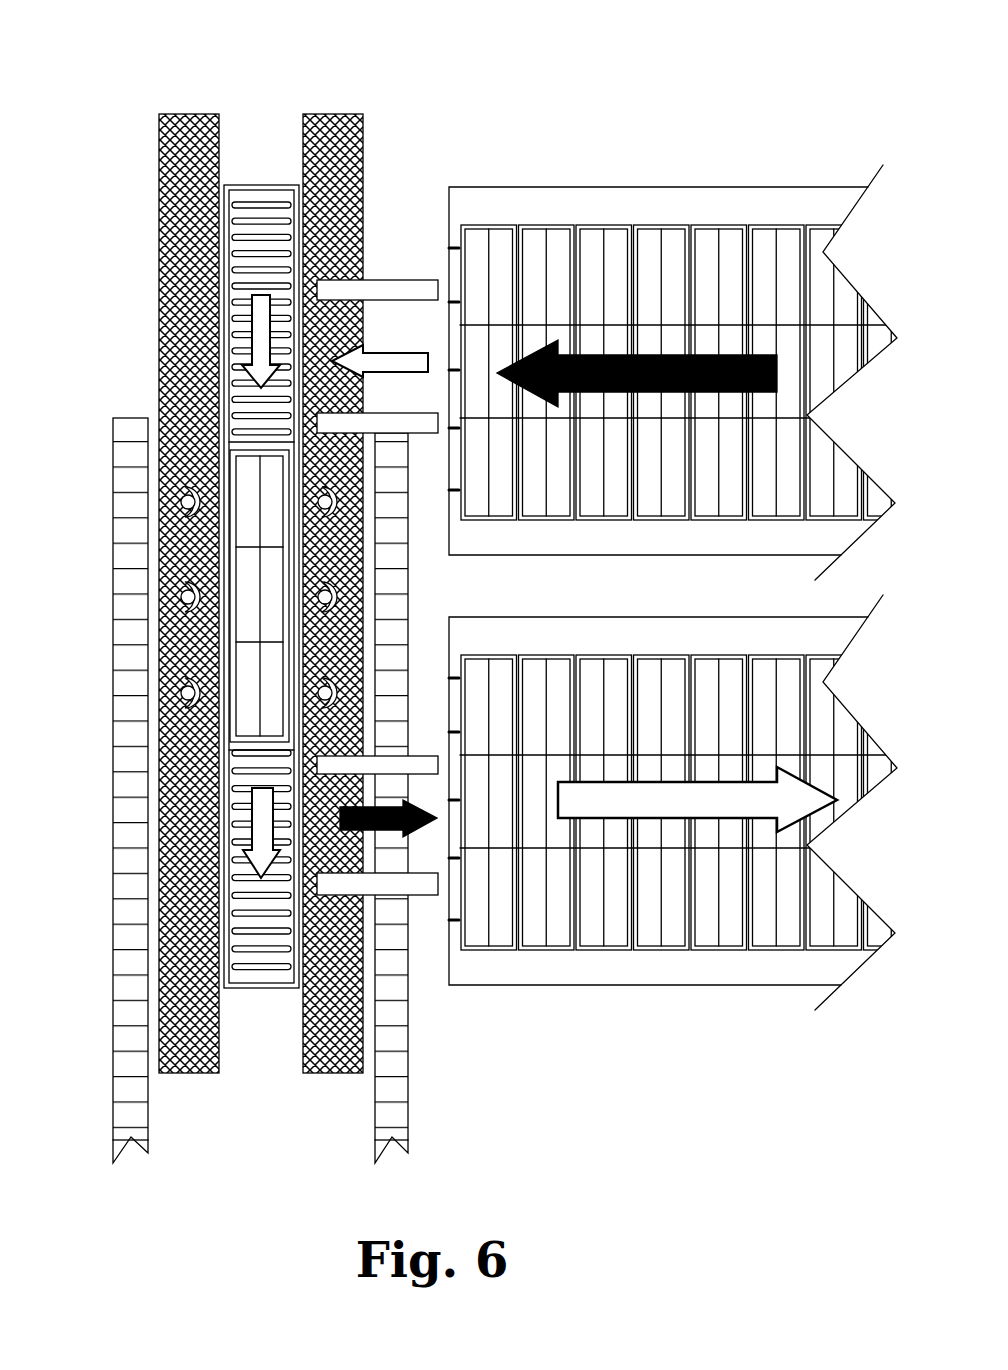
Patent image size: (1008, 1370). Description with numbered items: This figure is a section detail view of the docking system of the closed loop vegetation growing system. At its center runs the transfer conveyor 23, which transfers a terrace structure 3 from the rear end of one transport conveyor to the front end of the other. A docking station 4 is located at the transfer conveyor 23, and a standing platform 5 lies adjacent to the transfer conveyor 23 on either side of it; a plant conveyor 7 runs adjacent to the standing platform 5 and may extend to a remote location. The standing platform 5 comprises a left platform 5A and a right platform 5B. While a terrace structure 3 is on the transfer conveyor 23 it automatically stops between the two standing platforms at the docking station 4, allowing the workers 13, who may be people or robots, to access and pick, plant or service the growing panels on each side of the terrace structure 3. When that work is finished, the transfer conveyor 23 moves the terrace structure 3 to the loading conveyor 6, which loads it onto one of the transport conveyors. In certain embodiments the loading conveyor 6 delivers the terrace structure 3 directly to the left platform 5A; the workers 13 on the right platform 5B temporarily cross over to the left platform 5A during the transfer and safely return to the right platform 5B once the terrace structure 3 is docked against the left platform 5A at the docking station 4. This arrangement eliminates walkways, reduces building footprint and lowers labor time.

The terrace structure 3 is at (605, 270).
The docking station 4 is at (253, 1090).
The standing platform 5 is at (263, 543).
The left platform 5A is at (157, 130).
The right platform 5B is at (367, 137).
The loading conveyor 6 is at (420, 887).
The plant conveyor 7 is at (133, 660).
The worker 13 is at (163, 698).
The transfer conveyor 23 is at (262, 188).